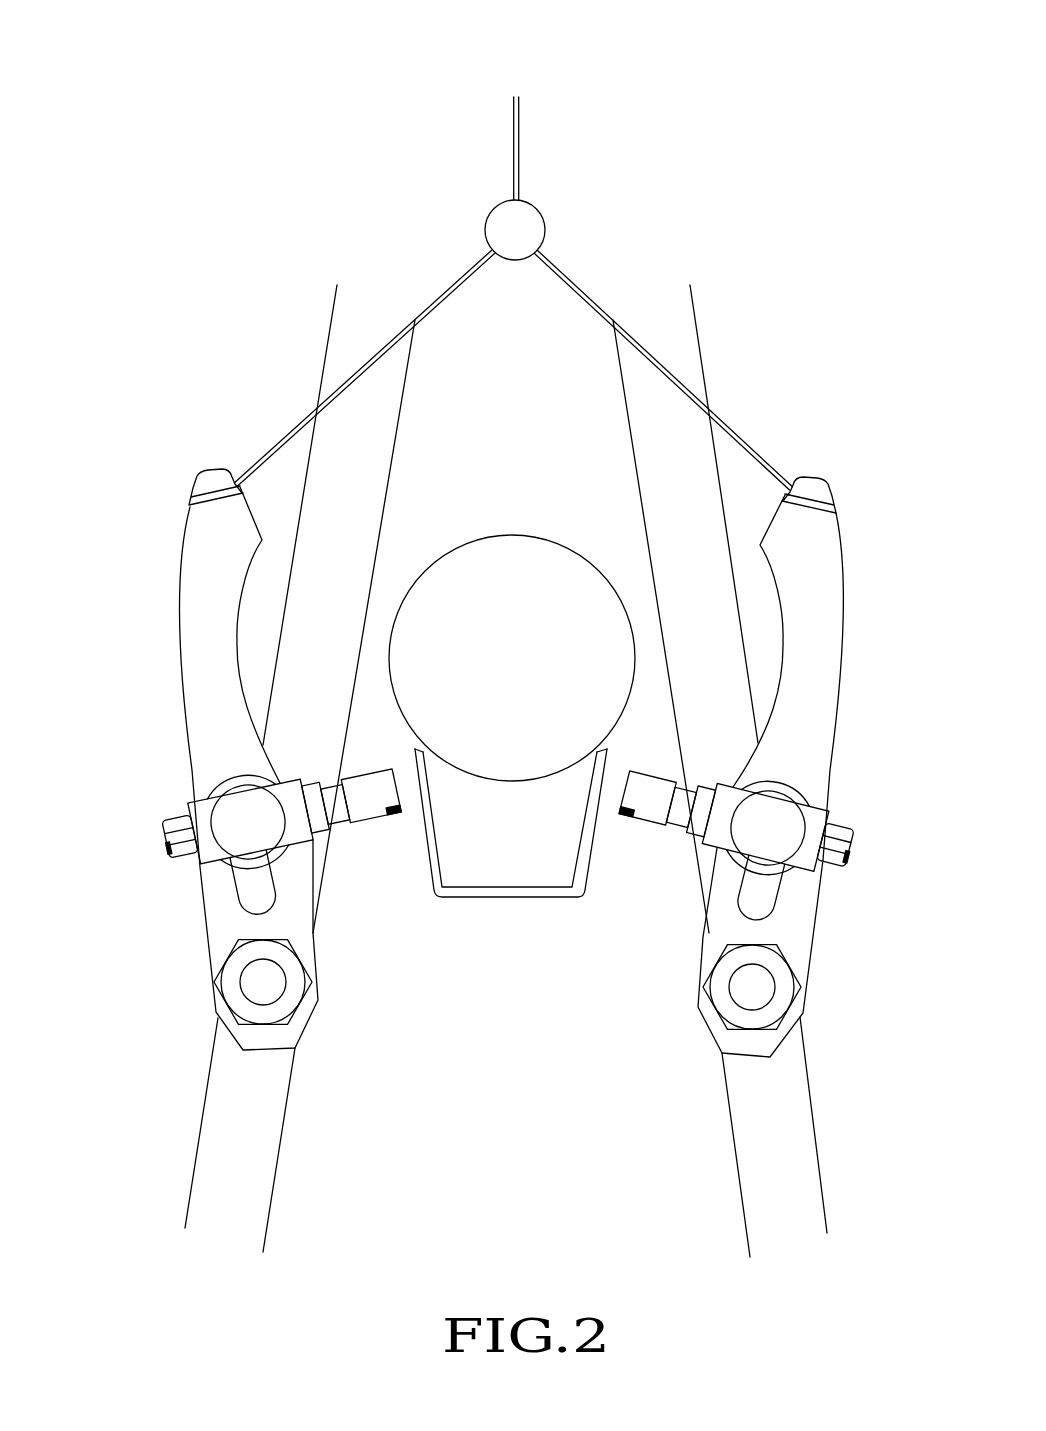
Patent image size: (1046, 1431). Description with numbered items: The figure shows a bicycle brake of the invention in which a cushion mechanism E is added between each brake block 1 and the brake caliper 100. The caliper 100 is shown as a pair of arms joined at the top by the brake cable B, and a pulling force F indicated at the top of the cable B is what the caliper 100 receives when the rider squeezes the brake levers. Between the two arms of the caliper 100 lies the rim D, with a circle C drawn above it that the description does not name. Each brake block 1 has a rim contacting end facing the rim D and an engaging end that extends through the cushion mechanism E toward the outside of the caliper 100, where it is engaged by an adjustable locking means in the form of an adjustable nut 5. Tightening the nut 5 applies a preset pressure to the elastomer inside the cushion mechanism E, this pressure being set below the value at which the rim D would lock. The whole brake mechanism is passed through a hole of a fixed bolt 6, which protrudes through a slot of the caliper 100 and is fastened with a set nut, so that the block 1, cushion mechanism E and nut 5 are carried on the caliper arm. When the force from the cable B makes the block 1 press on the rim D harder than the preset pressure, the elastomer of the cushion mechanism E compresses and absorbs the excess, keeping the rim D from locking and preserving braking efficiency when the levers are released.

The lifting force / hoist rope F is at (516, 92).
The brake cable B is at (573, 283).
The cylindrical load (pipe) C is at (558, 533).
The rim D is at (456, 899).
The brake caliper 100 is at (195, 647).
The brake block 1 is at (377, 803).
The fixed bolt 6 is at (788, 812).
The cushion mechanism E is at (832, 884).
The adjustable locking means (adjustable nut) 5 is at (846, 822).